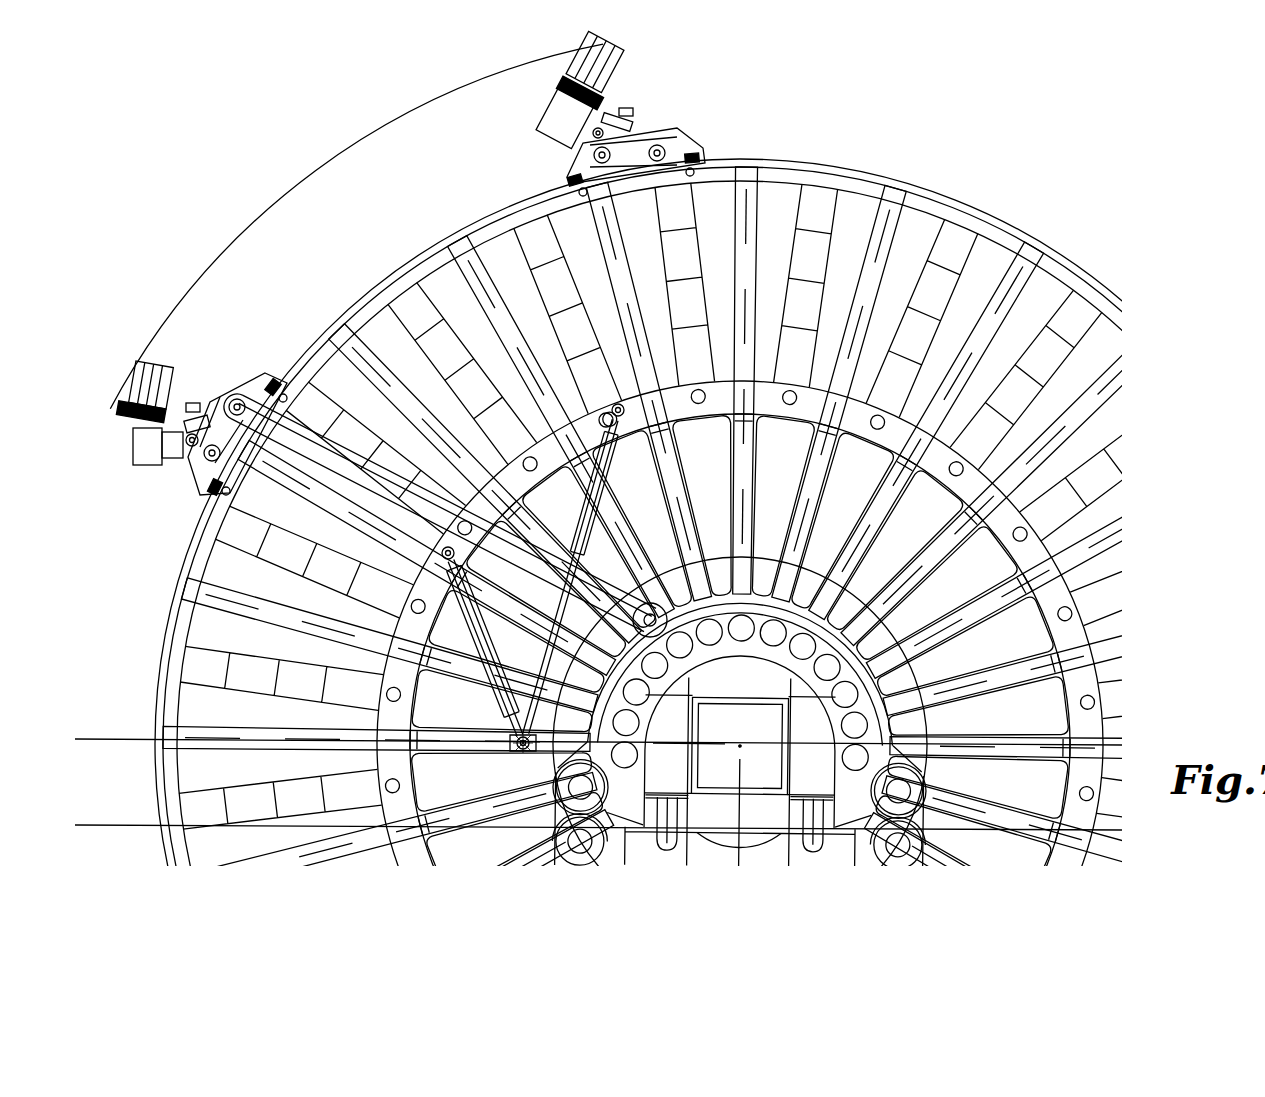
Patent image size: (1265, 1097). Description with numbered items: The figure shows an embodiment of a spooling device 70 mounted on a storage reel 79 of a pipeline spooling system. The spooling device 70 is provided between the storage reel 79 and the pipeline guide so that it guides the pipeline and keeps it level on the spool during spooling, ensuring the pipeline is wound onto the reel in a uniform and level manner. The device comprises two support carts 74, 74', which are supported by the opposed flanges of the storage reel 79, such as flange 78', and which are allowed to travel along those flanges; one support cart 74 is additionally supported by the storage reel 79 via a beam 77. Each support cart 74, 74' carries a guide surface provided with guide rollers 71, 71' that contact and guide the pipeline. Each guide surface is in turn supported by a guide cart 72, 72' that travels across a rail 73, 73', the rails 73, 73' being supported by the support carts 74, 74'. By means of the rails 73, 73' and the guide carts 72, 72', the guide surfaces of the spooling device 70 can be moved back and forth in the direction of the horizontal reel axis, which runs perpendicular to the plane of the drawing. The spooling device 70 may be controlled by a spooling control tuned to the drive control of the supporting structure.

The spooling device 70 is at (106, 468).
The guide rollers 71 is at (170, 353).
The guide cart 72 is at (147, 486).
The rail 73 is at (181, 472).
The support cart 74 is at (236, 388).
The beam 77 is at (445, 515).
The flange 78' is at (710, 603).
The storage reel 79 is at (390, 632).
The guide rollers 71' is at (618, 70).
The guide cart 72' is at (529, 117).
The rail 73' is at (557, 146).
The support cart 74' is at (653, 126).